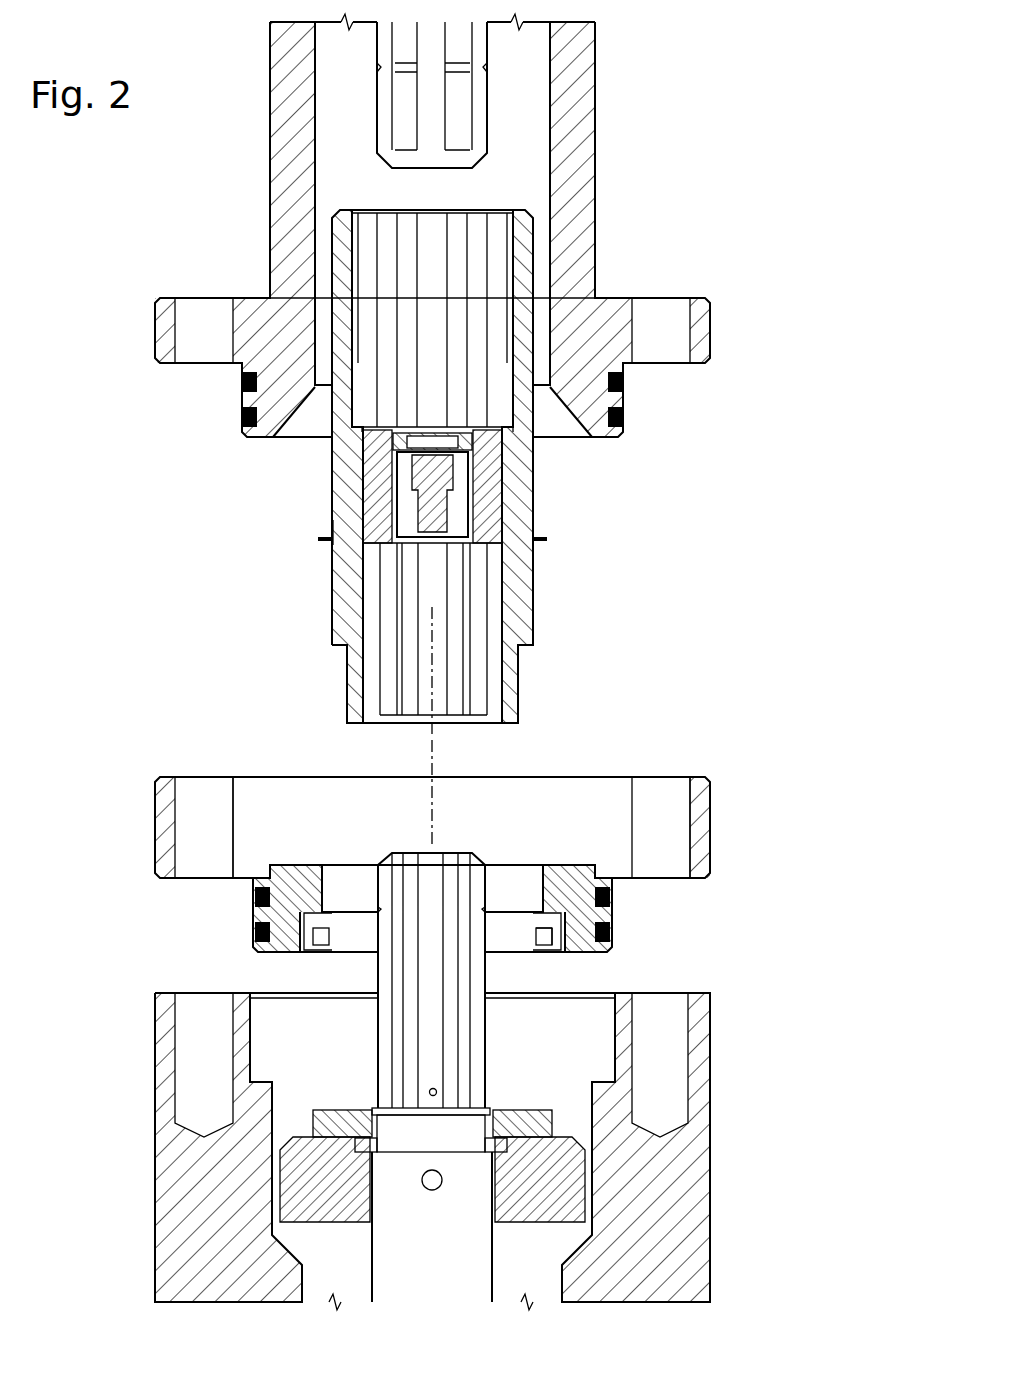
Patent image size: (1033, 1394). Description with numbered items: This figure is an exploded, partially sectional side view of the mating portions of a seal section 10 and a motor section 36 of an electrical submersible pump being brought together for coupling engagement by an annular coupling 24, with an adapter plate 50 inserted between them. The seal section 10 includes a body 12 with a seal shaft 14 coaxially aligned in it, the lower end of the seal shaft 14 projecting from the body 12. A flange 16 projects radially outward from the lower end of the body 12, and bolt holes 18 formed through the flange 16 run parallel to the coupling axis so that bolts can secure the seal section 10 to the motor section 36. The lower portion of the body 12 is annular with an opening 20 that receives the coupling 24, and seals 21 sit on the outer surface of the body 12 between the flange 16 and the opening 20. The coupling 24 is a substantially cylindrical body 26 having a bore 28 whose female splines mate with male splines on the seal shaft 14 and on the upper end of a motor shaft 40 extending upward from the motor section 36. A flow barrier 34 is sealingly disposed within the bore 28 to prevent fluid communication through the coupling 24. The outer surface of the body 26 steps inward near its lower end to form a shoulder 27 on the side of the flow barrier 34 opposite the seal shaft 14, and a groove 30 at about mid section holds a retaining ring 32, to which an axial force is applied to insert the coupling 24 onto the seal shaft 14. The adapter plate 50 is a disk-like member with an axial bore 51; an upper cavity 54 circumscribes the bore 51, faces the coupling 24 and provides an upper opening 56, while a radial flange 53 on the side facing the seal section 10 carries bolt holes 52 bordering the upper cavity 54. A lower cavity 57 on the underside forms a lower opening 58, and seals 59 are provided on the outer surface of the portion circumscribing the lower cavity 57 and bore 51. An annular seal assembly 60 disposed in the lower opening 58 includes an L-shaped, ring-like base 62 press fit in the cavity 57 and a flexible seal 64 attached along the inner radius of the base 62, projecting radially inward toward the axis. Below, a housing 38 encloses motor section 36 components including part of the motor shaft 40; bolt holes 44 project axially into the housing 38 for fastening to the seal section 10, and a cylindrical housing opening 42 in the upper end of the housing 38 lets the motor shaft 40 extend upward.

The seal section 10 is at (486, 364).
The body 12 is at (570, 163).
The seal shaft 14 is at (377, 80).
The flange 16 is at (711, 341).
The bolt holes 18 is at (667, 280).
The opening 20 is at (563, 457).
The seals 21 is at (652, 417).
The coupling 24 is at (556, 635).
The body 26 is at (518, 690).
The shoulder 27 is at (298, 647).
The bore 28 is at (398, 693).
The groove 30 is at (333, 535).
The retaining ring 32 is at (318, 538).
The flow barrier 34 is at (380, 465).
The motor section 36 is at (476, 1151).
The housing 38 is at (713, 1077).
The motor shaft 40 is at (432, 1196).
The housing opening 42 is at (227, 978).
The bolt holes 44 is at (197, 1068).
The adapter plate 50 is at (476, 913).
The axial bore 51 is at (484, 845).
The bolt holes 52 is at (660, 785).
The radial flange 53 is at (713, 805).
The upper cavity 54 is at (578, 846).
The upper opening 56 is at (255, 812).
The lower cavity 57 is at (363, 943).
The lower opening 58 is at (313, 958).
The seals 59 is at (647, 925).
The annular seal assembly 60 is at (578, 950).
The base 62 is at (550, 953).
The flexible seal 64 is at (530, 937).